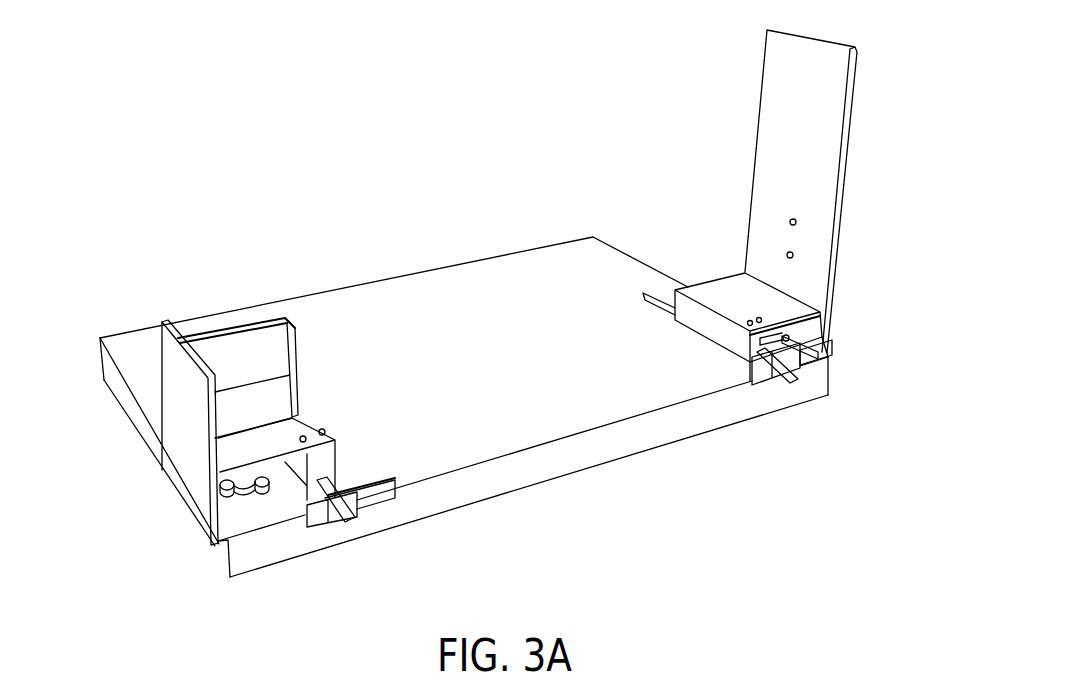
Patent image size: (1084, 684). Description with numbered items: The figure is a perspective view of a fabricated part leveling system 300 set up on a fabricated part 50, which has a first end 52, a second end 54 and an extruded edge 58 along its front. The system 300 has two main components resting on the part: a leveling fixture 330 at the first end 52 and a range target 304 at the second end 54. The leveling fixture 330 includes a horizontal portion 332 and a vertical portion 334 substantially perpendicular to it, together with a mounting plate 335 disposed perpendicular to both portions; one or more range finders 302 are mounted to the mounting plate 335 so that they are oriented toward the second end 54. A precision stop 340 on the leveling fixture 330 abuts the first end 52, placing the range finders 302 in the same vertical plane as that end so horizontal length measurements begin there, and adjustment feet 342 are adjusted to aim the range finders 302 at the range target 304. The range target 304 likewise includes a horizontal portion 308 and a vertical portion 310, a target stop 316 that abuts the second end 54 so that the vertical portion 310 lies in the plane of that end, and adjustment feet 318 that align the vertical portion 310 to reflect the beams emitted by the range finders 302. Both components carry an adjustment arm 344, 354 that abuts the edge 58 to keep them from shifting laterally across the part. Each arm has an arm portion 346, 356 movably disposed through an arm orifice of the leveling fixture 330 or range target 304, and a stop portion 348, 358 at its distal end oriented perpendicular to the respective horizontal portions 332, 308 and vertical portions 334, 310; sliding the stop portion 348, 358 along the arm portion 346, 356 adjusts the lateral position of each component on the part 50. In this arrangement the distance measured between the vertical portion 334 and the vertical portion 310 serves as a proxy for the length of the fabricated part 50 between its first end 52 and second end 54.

The fabricated part 50 is at (415, 298).
The first end 52 is at (217, 562).
The second end 54 is at (830, 355).
The edge 58 is at (532, 467).
The fabricated part leveling system 300 is at (225, 240).
The range finder 302 is at (282, 398).
The range target 304 is at (892, 125).
The horizontal portion 308 is at (798, 310).
The vertical portion 310 is at (820, 170).
The target stop 316 is at (832, 333).
The adjustment feet 318 is at (825, 346).
The leveling fixture 330 is at (148, 287).
The horizontal portion 332 is at (307, 430).
The vertical portion 334 is at (175, 400).
The mounting plate 335 is at (233, 328).
The precision stop 340 is at (198, 497).
The adjustment feet 342 is at (253, 497).
The adjustment arm 344 is at (348, 538).
The arm portion 346 is at (340, 487).
The stop portion 348 is at (380, 498).
The adjustment arm 354 is at (762, 416).
The arm portion 356 is at (752, 366).
The stop portion 358 is at (772, 378).